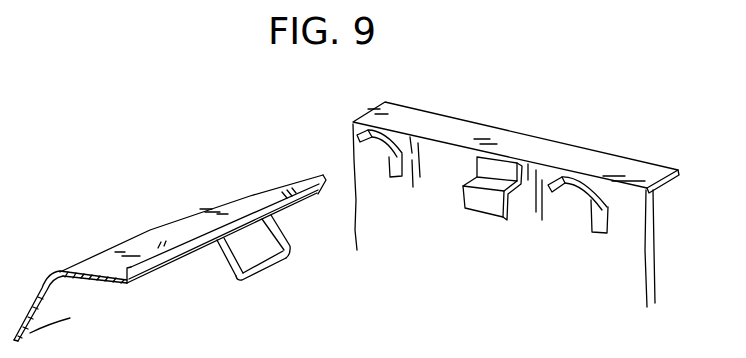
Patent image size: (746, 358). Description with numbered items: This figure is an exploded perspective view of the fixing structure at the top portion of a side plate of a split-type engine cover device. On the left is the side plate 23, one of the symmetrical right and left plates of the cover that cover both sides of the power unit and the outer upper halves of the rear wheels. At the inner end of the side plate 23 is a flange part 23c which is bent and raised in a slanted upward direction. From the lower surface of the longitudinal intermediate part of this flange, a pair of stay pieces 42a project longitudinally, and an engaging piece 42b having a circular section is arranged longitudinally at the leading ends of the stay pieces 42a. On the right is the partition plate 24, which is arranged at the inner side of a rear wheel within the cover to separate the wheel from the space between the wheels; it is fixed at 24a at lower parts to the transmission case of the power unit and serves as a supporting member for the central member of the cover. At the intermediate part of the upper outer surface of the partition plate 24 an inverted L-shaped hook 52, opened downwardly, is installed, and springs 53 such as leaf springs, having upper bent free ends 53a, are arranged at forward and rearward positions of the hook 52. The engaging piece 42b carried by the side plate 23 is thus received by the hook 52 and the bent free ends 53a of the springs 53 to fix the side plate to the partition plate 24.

The side plate 23 is at (64, 268).
The flange part 23c is at (287, 200).
The stay pieces 42a is at (224, 270).
The engaging piece 42b is at (256, 270).
The partition plate 24 is at (637, 270).
The lower fixing portion of partition plate 24a is at (667, 187).
The hook 52 is at (482, 195).
The springs 53 is at (387, 160).
The upper bent free ends 53a is at (373, 133).